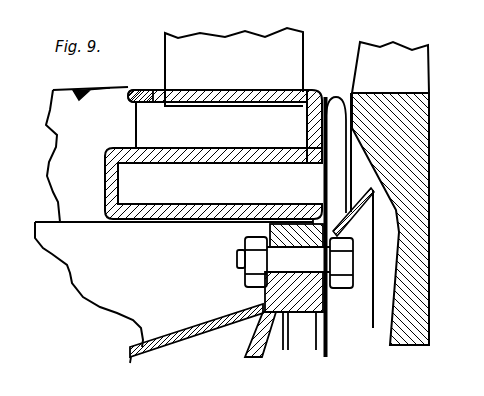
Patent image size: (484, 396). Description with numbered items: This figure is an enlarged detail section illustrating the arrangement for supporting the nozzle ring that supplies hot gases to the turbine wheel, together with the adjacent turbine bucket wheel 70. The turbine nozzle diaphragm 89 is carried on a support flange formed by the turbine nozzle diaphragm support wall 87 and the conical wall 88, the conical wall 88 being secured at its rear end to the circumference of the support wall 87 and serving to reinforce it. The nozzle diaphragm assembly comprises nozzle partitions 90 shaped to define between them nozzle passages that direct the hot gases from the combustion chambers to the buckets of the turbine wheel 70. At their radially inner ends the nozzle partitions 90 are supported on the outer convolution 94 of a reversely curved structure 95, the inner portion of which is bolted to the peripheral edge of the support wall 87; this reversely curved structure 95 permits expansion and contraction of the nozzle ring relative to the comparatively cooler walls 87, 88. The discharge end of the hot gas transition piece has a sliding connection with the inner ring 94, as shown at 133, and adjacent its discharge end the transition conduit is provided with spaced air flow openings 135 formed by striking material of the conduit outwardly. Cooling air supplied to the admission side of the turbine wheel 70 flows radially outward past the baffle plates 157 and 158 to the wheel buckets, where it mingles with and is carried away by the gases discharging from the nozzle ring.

The turbine bucket wheel 70 is at (412, 249).
The turbine nozzle diaphragm support wall 87 is at (257, 337).
The conical wall 88 is at (205, 323).
The turbine nozzle diaphragm 89 is at (312, 89).
The nozzle partitions 90 is at (249, 45).
The outer convolution 94 is at (263, 90).
The reversely curved structure 95 is at (104, 160).
The sliding connection 133 is at (145, 88).
The air flow openings 135 is at (82, 99).
The baffle plate 157 is at (373, 195).
The baffle plate 158 is at (322, 134).